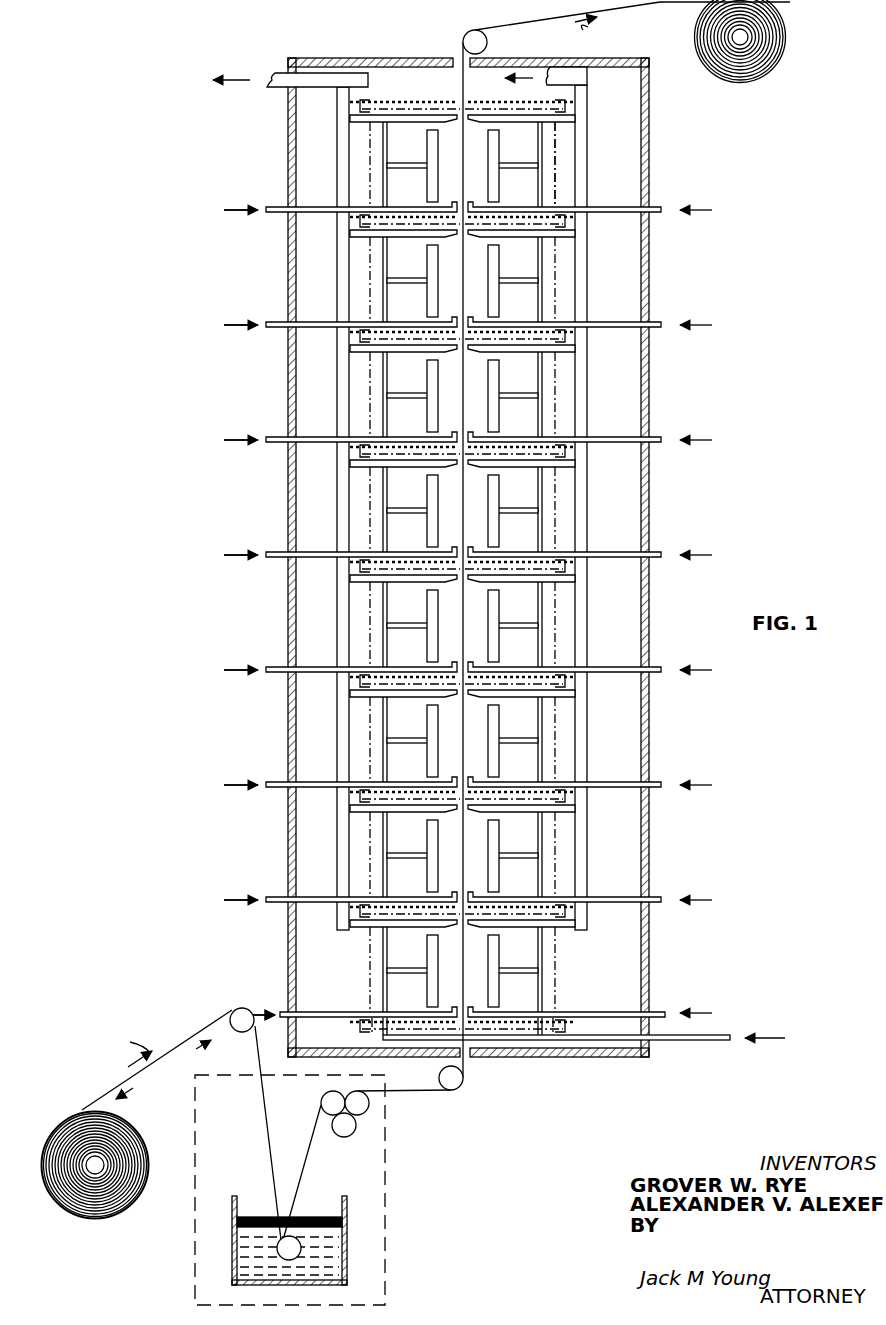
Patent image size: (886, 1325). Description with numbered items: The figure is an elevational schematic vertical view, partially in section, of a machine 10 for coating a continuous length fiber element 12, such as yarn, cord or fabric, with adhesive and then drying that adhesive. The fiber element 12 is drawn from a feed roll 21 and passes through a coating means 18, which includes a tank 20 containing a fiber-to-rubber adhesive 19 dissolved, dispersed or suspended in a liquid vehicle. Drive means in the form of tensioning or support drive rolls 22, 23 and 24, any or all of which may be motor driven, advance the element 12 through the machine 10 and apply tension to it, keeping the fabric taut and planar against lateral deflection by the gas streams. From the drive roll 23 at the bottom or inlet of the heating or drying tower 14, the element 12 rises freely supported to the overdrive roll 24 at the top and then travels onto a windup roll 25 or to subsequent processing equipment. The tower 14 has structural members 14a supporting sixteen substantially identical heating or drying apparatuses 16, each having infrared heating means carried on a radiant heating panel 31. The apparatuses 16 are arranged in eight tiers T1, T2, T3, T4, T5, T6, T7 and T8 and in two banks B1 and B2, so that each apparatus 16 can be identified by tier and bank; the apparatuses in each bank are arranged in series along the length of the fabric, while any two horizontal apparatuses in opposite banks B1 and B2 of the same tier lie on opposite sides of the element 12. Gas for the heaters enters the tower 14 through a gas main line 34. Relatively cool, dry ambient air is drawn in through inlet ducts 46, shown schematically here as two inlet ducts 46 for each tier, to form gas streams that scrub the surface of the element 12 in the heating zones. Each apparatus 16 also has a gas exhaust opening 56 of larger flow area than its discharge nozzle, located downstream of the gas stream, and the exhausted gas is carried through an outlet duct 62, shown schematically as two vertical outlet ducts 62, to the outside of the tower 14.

The machine 10 is at (283, 1000).
The fiber element 12 is at (115, 1085).
The drying tower 14 is at (650, 286).
The structural members 14a is at (553, 447).
The heating apparatus 16 is at (557, 633).
The coating means 18 is at (392, 1196).
The adhesive 19 is at (343, 1224).
The tank 20 is at (232, 1268).
The feed roll 21 is at (110, 1218).
The drive roll 22 is at (245, 1027).
The drive roll 23 is at (460, 1088).
The overdrive roll 24 is at (472, 32).
The windup roll 25 is at (784, 49).
The radiant heating panel 31 is at (427, 150).
The gas main line 34 is at (385, 944).
The inlet duct 46 is at (280, 328).
The gas exhaust opening 56 is at (460, 104).
The outlet duct 62 is at (285, 73).
The tier T1 is at (370, 990).
The tier T2 is at (370, 869).
The tier T3 is at (370, 750).
The tier T4 is at (370, 628).
The tier T5 is at (370, 510).
The tier T6 is at (370, 405).
The tier T7 is at (370, 291).
The tier T8 is at (370, 182).
The bank B1 is at (433, 1033).
The bank B2 is at (512, 1030).